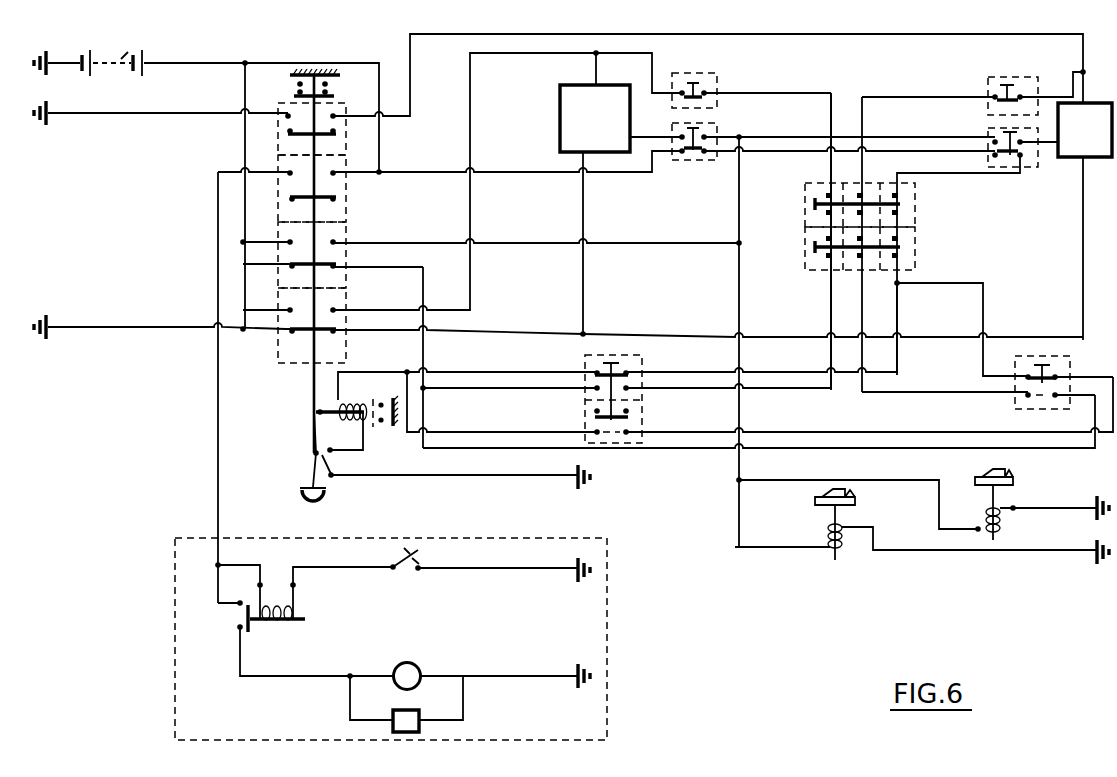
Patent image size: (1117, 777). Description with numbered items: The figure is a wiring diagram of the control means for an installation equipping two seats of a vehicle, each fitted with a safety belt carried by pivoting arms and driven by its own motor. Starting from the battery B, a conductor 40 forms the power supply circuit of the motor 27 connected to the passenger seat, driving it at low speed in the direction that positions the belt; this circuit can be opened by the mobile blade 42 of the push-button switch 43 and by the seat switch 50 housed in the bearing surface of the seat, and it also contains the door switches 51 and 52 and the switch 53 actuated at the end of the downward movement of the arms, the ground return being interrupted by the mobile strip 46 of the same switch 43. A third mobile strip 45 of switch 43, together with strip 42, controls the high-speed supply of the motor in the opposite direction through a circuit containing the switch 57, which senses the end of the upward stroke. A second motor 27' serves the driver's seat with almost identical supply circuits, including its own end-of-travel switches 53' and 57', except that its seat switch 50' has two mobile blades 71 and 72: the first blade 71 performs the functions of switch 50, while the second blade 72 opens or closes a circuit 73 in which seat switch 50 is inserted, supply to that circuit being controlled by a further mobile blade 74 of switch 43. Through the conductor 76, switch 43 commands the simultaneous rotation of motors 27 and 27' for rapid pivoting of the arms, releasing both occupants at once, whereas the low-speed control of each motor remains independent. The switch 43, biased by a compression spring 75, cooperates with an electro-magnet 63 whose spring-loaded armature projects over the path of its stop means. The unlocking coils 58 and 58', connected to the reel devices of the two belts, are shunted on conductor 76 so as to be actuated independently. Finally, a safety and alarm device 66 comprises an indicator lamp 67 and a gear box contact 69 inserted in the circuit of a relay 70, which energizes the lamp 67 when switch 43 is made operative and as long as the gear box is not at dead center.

The battery B is at (146, 51).
The conductor 40 is at (219, 63).
The compression spring 75 is at (316, 72).
The mobile blade 74 is at (334, 132).
The third mobile strip 45 is at (333, 197).
The mobile blade 42 is at (334, 262).
The mobile strip 46 is at (278, 352).
The switch 43 is at (296, 395).
The electro-magnet 63 is at (352, 400).
The motor 27' is at (574, 101).
The switch 53' is at (713, 80).
The switch 57' is at (812, 161).
The conductor 76 is at (634, 247).
The switch 52 is at (914, 208).
The switch 51 is at (914, 248).
The switch 53 is at (972, 86).
The motor 27 is at (1075, 100).
The switch 57 is at (989, 163).
The seat switch 50' is at (631, 374).
The mobile blade 71 is at (636, 372).
The mobile blade 72 is at (630, 410).
The seat switch 50 is at (987, 346).
The circuit 73 is at (858, 480).
The coil 58' is at (956, 546).
The coil 58 is at (1036, 539).
The safety and alarm device 66 is at (178, 623).
The gear box contact 69 is at (410, 568).
The relay 70 is at (286, 628).
The indicator lamp 67 is at (402, 662).